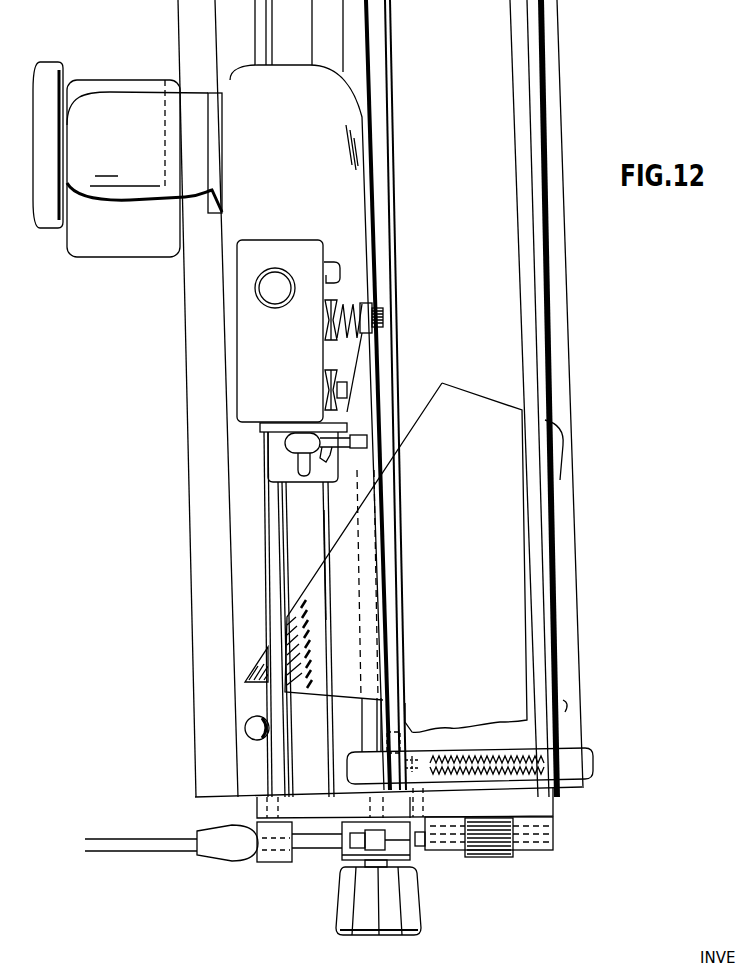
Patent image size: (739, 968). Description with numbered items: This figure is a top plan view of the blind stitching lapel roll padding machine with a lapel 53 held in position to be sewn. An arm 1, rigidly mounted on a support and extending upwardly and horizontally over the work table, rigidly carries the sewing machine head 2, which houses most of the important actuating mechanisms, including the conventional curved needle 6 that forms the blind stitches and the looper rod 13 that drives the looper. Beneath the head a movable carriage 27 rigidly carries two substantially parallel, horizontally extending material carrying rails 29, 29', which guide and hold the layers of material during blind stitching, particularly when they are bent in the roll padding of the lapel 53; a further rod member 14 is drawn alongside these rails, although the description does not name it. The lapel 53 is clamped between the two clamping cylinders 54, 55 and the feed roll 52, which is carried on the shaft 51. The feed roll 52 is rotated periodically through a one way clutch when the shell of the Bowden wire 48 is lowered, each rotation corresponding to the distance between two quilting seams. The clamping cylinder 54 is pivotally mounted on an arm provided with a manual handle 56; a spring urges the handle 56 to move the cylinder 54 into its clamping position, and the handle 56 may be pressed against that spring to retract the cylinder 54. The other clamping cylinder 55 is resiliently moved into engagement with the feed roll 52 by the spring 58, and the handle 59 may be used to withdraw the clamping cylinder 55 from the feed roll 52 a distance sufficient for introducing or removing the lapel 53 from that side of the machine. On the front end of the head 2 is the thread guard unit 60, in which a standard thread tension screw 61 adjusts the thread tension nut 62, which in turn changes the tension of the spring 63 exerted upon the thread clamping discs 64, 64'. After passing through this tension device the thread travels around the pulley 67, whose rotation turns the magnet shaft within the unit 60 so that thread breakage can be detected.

The arm 1 is at (127, 107).
The sewing machine head 2 is at (340, 125).
The curved needle 6 is at (327, 455).
The looper rod 13 is at (256, 290).
The guide rod 14 is at (332, 508).
The movable carriage 27 is at (248, 600).
The material carrying rail 29 is at (339, 565).
The material carrying rail 29' is at (265, 639).
The Bowden wire 48 is at (165, 843).
The shaft 51 is at (372, 806).
The feed roll 52 is at (367, 737).
The lapel 53 is at (480, 410).
The clamping cylinder 54 is at (276, 560).
The clamping cylinder 55 is at (399, 365).
The manual handle 56 is at (247, 727).
The spring 58 is at (517, 750).
The handle 59 is at (521, 309).
The thread guard unit 60 is at (252, 378).
The thread tension screw 61 is at (384, 320).
The thread tension nut 62 is at (373, 310).
The spring 63 is at (356, 302).
The thread clamping disc 64 is at (317, 300).
The thread clamping disc 64' is at (343, 279).
The pulley 67 is at (328, 381).